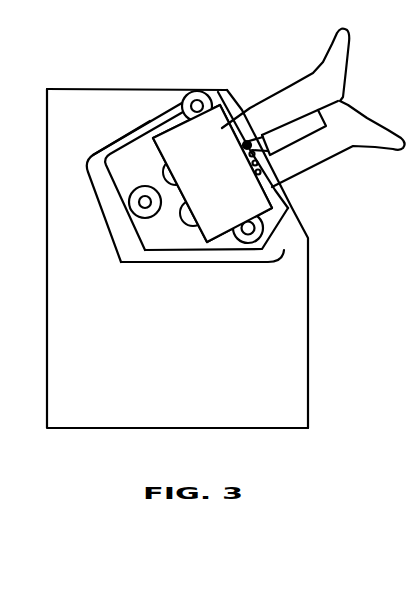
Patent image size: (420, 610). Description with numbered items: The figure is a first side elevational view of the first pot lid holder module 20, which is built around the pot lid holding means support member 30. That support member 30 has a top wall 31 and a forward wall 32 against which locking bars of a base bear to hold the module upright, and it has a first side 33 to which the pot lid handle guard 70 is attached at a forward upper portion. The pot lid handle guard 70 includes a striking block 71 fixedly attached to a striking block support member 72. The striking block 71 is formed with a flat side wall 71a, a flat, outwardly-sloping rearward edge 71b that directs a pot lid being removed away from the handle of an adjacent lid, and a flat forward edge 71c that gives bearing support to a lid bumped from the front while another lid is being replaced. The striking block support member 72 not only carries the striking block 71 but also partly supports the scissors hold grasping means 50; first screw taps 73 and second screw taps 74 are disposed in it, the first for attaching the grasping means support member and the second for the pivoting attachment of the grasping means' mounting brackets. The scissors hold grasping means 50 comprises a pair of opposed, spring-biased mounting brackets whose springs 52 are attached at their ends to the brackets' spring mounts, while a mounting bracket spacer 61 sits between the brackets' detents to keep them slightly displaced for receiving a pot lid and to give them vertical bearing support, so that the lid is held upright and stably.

The first pot lid holder module 20 is at (72, 82).
The pot lid holding means support member 30 is at (207, 237).
The top wall 31 is at (125, 89).
The forward wall 32 is at (309, 325).
The first side 33 is at (231, 386).
The scissors hold grasping means 50 is at (313, 108).
The springs 52 is at (253, 131).
The mounting bracket spacer 61 is at (279, 137).
The pot lid handle guard 70 is at (123, 261).
The striking block 71 is at (230, 153).
The flat side wall 71a is at (233, 167).
The outwardly-sloping rearward edge 71b is at (158, 139).
The forward edge 71c is at (282, 185).
The striking block support member 72 is at (166, 114).
The first screw taps 73 is at (138, 191).
The second screw taps 74 is at (172, 184).